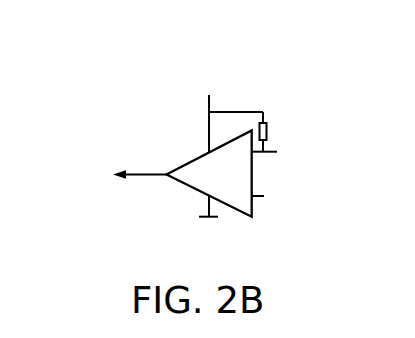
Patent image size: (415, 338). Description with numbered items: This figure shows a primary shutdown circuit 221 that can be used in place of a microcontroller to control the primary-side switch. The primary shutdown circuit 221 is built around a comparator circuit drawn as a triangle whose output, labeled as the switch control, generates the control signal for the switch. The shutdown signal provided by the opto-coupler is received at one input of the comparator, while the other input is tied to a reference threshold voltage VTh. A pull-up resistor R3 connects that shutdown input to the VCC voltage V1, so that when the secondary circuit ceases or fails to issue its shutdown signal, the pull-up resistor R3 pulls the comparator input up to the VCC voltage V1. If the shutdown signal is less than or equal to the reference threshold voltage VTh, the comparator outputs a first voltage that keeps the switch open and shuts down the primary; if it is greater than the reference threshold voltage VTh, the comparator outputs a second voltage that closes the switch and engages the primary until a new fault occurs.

The primary shutdown circuit 221 is at (172, 125).
The VCC voltage V1 is at (233, 115).
The pull-up resistor R3 is at (279, 132).
The reference threshold voltage VTh is at (273, 197).